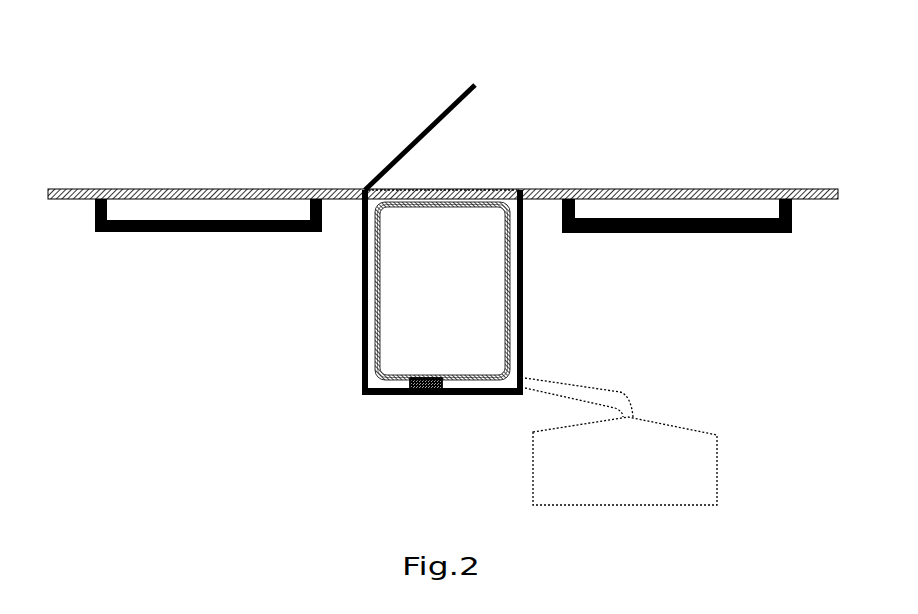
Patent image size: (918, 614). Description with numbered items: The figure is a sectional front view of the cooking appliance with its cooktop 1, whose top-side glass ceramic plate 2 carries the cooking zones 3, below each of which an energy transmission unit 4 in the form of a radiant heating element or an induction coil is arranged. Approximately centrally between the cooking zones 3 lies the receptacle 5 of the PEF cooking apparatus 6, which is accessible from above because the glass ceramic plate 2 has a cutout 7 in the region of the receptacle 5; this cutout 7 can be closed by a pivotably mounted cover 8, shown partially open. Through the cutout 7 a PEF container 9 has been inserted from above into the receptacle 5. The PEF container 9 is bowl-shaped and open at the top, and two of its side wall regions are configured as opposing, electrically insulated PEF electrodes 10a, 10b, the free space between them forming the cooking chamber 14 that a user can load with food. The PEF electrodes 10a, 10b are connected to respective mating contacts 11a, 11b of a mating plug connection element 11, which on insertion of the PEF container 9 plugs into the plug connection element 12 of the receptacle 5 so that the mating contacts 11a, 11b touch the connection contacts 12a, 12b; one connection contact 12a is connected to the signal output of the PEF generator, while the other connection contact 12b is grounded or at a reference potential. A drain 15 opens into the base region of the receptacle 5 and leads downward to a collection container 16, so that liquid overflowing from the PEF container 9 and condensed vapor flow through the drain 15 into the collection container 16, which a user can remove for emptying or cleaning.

The cooktop 1 is at (234, 99).
The glass ceramic plate 2 is at (82, 188).
The cooking zones 3 is at (168, 160).
The energy transmission unit 4 is at (167, 233).
The receptacle 5 is at (375, 395).
The PEF cooking apparatus 6 is at (289, 351).
The cutout 7 is at (513, 197).
The cover 8 is at (455, 102).
The PEF container 9 is at (377, 352).
The PEF electrode 10a is at (363, 257).
The PEF electrode 10b is at (510, 297).
The mating plug connection element 11 is at (425, 380).
The mating contact 11a is at (426, 384).
The mating contact 11b is at (426, 384).
The plug connection element 12 is at (433, 393).
The connection contact 12a is at (426, 384).
The connection contact 12b is at (426, 384).
The cooking chamber 14 is at (377, 298).
The drain 15 is at (575, 386).
The collection container 16 is at (677, 428).